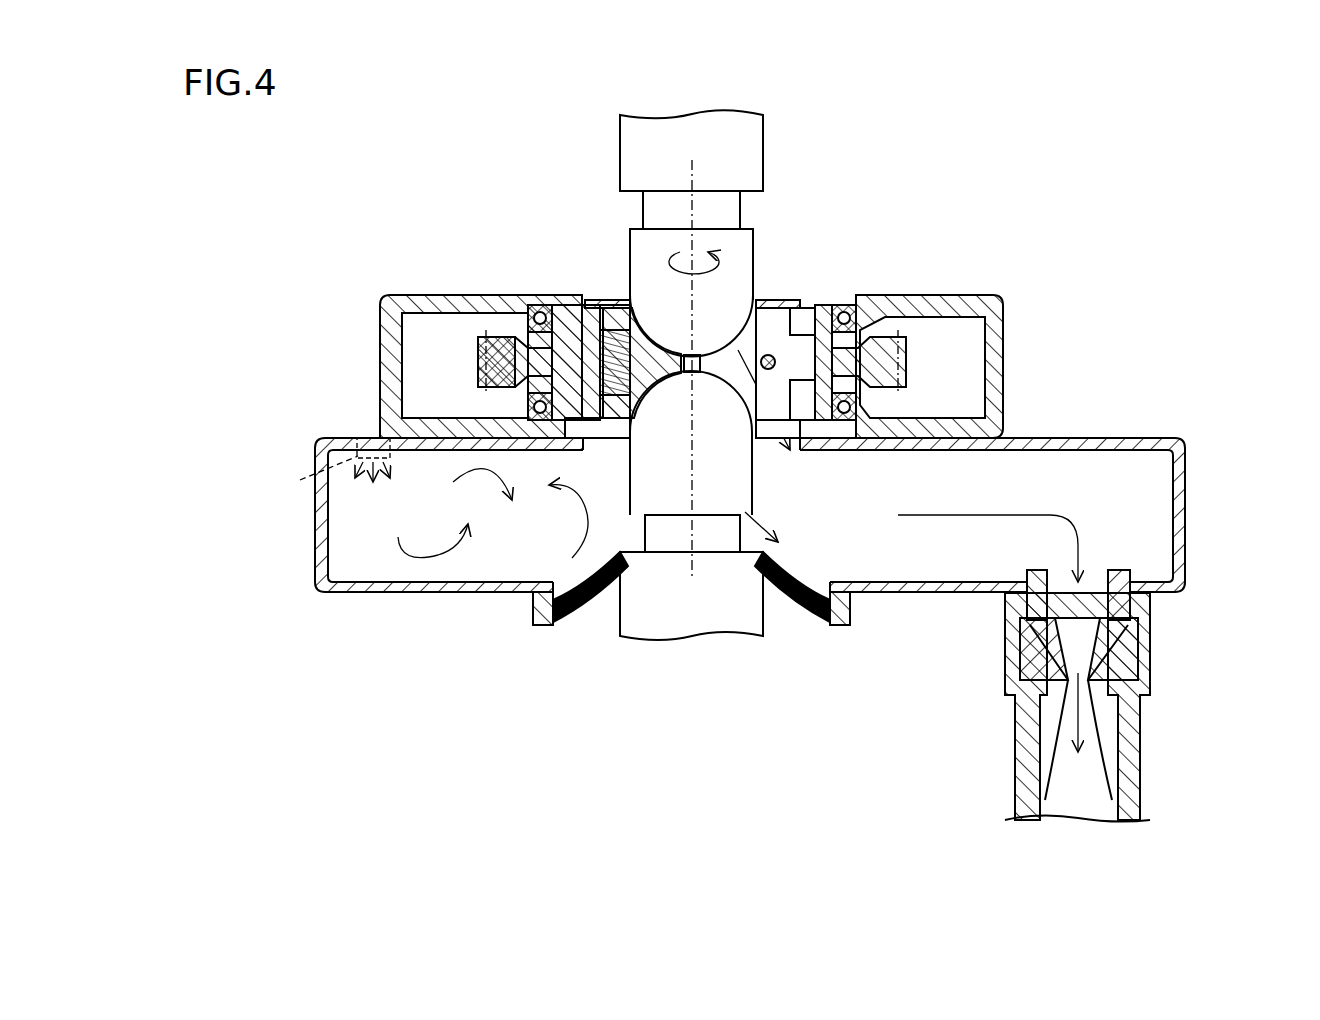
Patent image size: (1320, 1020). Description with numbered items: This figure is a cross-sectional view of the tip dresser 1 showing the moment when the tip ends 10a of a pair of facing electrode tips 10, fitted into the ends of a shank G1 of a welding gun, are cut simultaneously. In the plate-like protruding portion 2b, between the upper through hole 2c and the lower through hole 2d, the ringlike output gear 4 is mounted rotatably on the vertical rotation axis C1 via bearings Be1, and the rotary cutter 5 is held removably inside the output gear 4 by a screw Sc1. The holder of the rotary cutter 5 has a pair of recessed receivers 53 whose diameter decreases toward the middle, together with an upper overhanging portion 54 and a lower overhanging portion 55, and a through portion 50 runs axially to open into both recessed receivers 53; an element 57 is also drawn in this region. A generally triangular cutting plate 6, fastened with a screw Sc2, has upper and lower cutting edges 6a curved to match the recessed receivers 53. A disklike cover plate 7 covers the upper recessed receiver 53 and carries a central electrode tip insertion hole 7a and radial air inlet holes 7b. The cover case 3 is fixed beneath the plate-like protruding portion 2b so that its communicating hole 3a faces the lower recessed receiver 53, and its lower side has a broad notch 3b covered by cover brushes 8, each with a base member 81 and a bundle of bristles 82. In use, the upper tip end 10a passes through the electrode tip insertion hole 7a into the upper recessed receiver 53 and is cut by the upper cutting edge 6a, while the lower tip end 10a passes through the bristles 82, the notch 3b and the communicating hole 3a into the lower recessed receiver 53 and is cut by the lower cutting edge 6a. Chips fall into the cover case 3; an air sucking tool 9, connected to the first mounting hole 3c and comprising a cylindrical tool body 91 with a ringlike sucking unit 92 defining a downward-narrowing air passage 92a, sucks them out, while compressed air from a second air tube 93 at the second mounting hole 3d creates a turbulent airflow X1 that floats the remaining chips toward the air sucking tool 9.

The tip dresser 1 is at (758, 447).
The cover case 3 is at (1188, 476).
The communicating hole 3a is at (780, 452).
The notch 3b is at (822, 582).
The first mounting hole 3c is at (1133, 575).
The second mounting hole 3d is at (312, 477).
The plate-like protruding portion 2b is at (1000, 352).
The upper through hole 2c is at (796, 300).
The lower through hole 2d is at (596, 440).
The output gear 4 is at (805, 357).
The rotary cutter 5 is at (655, 396).
The cutting plate 6 is at (895, 344).
The cutting edge 6a is at (728, 340).
The cover plate 7 is at (766, 300).
The electrode tip insertion hole 7a is at (636, 300).
The air inlet hole 7b is at (780, 300).
The cover brush 8 is at (691, 644).
The base member 81 is at (541, 628).
The bristles 82 is at (594, 622).
The air sucking tool 9 is at (1112, 707).
The tool body 91 is at (1150, 620).
The sucking unit 92 is at (1140, 655).
The air passage 92a is at (1070, 690).
The second air tube 93 is at (362, 436).
The electrode tip 10 is at (718, 405).
The tip end 10a is at (663, 352).
The through portion 50 is at (794, 362).
The recessed receiver 53 is at (652, 320).
The upper overhanging portion 54 is at (828, 310).
The lower overhanging portion 55 is at (840, 376).
The coupling member 57 is at (525, 395).
The shank G1 is at (766, 130).
The rotation axis C1 is at (698, 218).
The turbulent airflow X1 is at (505, 507).
The screw Sc1 is at (577, 305).
The screw Sc2 is at (773, 366).
The bearing Be1 is at (846, 312).